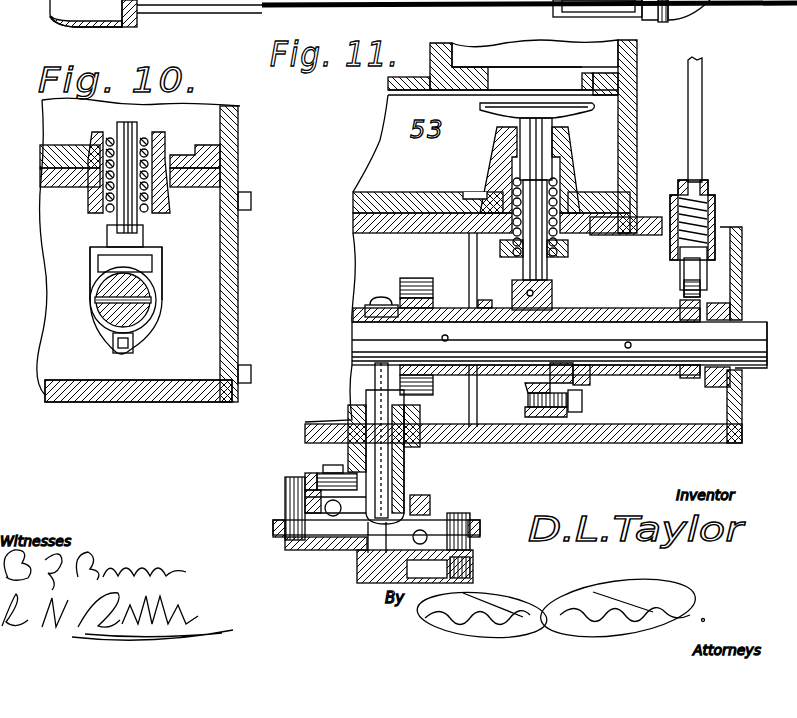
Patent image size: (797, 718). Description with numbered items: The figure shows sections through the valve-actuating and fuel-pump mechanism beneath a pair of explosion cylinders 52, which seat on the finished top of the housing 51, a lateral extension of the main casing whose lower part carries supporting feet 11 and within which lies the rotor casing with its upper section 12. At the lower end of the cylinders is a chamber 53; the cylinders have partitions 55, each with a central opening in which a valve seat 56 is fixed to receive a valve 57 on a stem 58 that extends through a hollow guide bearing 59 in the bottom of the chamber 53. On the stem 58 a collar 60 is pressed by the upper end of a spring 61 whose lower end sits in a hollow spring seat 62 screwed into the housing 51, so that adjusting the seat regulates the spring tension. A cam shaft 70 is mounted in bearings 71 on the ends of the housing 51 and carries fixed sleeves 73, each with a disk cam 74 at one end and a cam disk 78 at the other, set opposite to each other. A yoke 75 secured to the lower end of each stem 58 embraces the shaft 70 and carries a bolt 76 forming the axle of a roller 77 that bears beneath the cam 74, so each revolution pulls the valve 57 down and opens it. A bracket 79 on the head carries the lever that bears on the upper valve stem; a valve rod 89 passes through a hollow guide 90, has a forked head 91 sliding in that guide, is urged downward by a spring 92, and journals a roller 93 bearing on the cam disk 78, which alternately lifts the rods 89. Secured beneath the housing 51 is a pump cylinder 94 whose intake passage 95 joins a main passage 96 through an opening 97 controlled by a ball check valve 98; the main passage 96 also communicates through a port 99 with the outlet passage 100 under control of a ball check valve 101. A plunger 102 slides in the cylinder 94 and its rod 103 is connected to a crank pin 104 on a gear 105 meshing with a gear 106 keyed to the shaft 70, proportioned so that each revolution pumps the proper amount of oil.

In FIG. 11, the supporting feet 11 is at (185, 5).
In FIG. 11, the upper section of rotor casing 12 is at (493, 266).
In FIG. 10, the housing 51 is at (204, 373).
In FIG. 11, the housing 51 is at (672, 420).
In FIG. 11, the explosion cylinders 52 is at (448, 52).
In FIG. 10, the chamber 53 is at (228, 130).
In FIG. 11, the partitions 55 is at (462, 78).
In FIG. 11, the valve seat 56 is at (517, 70).
In FIG. 11, the valve 57 is at (493, 112).
In FIG. 11, the stem 58 is at (540, 176).
In FIG. 10, the hollow guide bearing 59 is at (92, 146).
In FIG. 11, the hollow guide bearing 59 is at (567, 173).
In FIG. 11, the collar 60 is at (540, 188).
In FIG. 10, the spring 61 is at (98, 188).
In FIG. 11, the spring 61 is at (567, 245).
In FIG. 10, the hollow spring seat 62 is at (156, 208).
In FIG. 11, the hollow spring seat 62 is at (503, 253).
In FIG. 10, the cam shaft 70 is at (98, 318).
In FIG. 11, the cam shaft 70 is at (353, 347).
In FIG. 11, the bearings 71 is at (717, 385).
In FIG. 10, the sleeves 73 is at (150, 325).
In FIG. 11, the sleeves 73 is at (633, 313).
In FIG. 10, the disk cam 74 is at (110, 330).
In FIG. 11, the disk cam 74 is at (570, 311).
In FIG. 10, the yokes 75 is at (160, 266).
In FIG. 11, the yokes 75 is at (533, 370).
In FIG. 10, the bolts 76 is at (123, 354).
In FIG. 11, the bolts 76 is at (542, 415).
In FIG. 10, the rollers 77 is at (135, 345).
In FIG. 11, the rollers 77 is at (561, 417).
In FIG. 10, the cam disk 78 is at (110, 265).
In FIG. 11, the bracket 79 is at (688, 313).
In FIG. 11, the valve rod 89 is at (702, 95).
In FIG. 11, the hollow guide 90 is at (708, 182).
In FIG. 11, the forked head 91 is at (705, 270).
In FIG. 11, the spring 92 is at (713, 210).
In FIG. 11, the roller 93 is at (695, 270).
In FIG. 11, the pump cylinder 94 is at (404, 473).
In FIG. 11, the intake passage 95 is at (438, 567).
In FIG. 11, the main passage 96 is at (350, 530).
In FIG. 11, the opening 97 is at (387, 577).
In FIG. 11, the ball check valve 98 is at (430, 530).
In FIG. 11, the port 99 is at (300, 545).
In FIG. 11, the outlet passage 100 is at (310, 502).
In FIG. 11, the ball check valve 101 is at (318, 483).
In FIG. 11, the plunger 102 is at (375, 463).
In FIG. 11, the rod 103 is at (380, 382).
In FIG. 11, the crank pin 104 is at (367, 310).
In FIG. 11, the gear 105 is at (402, 285).
In FIG. 11, the gear 106 is at (457, 400).